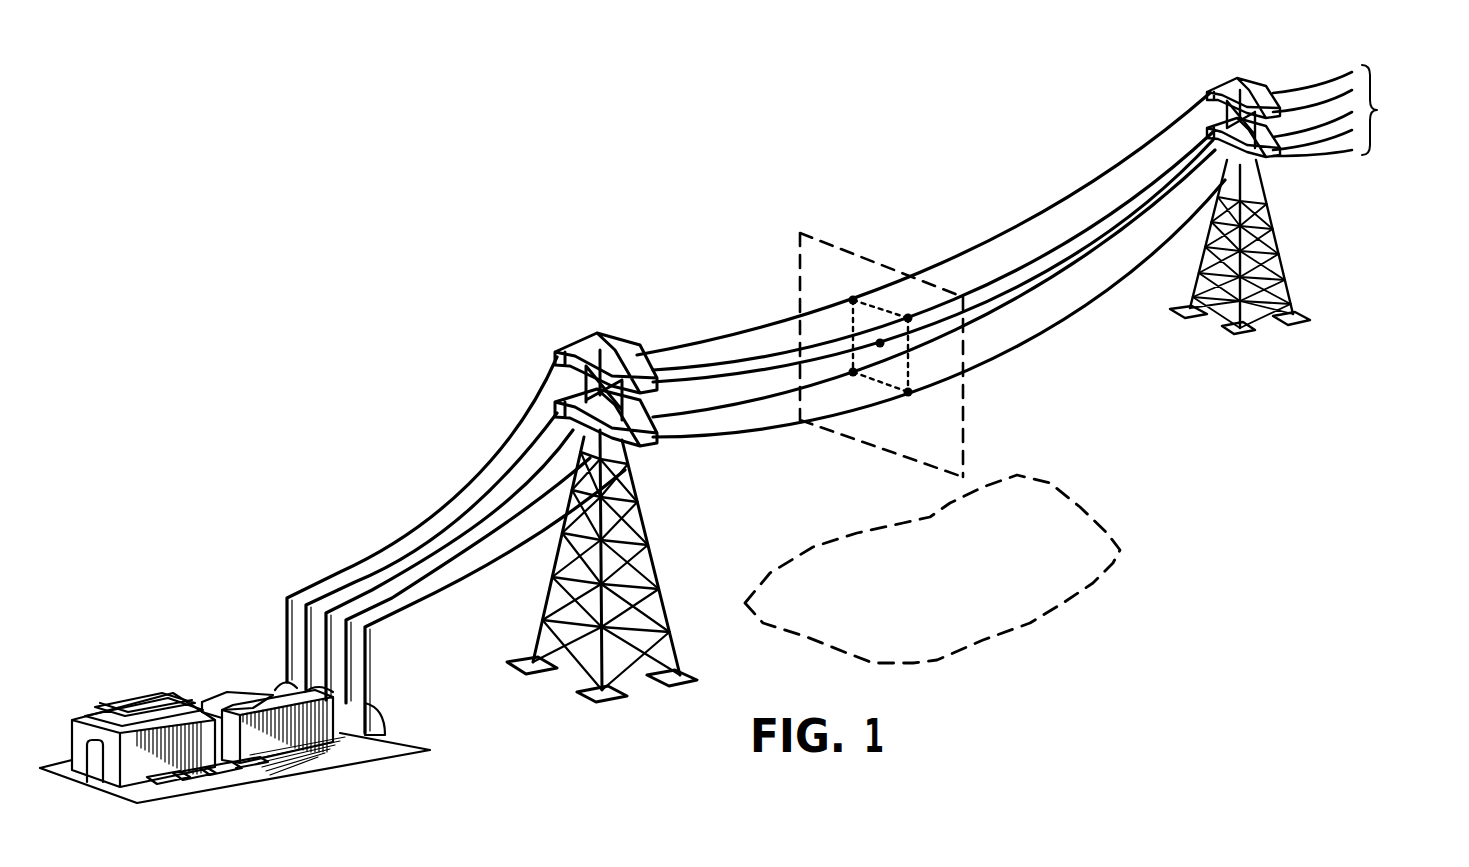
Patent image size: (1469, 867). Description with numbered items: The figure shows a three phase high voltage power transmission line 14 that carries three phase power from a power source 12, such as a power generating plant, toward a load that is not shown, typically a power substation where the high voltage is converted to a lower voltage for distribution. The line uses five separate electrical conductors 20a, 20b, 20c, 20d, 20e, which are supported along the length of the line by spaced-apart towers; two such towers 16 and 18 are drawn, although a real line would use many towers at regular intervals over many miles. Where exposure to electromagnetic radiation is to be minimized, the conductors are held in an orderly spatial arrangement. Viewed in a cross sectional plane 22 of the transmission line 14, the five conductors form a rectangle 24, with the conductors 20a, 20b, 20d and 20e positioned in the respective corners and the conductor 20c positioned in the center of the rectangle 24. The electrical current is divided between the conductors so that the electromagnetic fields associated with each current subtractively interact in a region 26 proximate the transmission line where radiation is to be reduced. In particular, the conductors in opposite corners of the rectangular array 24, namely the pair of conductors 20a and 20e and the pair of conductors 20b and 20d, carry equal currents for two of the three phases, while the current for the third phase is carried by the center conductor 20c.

The power source 12 is at (142, 692).
The three phase high voltage power transmission line 14 is at (1020, 100).
The tower 16 is at (657, 578).
The tower 18 is at (1280, 241).
The electrical conductor 20a is at (355, 568).
The electrical conductor 20b is at (420, 542).
The electrical conductor 20c is at (466, 528).
The electrical conductor 20d is at (392, 600).
The electrical conductor 20e is at (453, 586).
The cross sectional plane 22 is at (798, 259).
The rectangle 24 is at (880, 312).
The region 26 is at (942, 599).